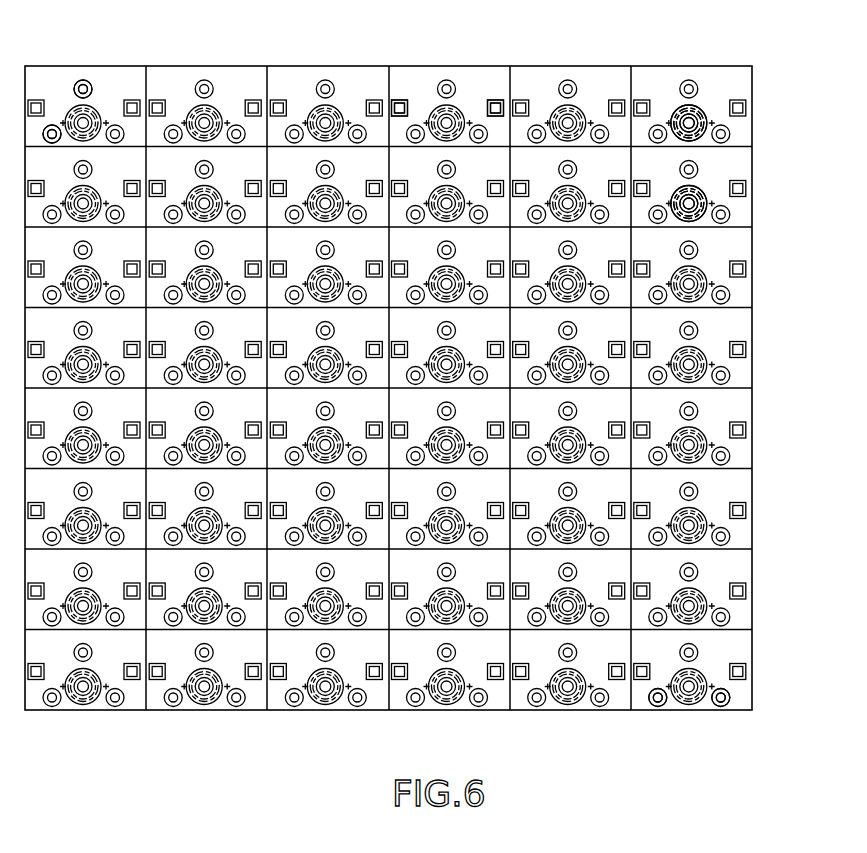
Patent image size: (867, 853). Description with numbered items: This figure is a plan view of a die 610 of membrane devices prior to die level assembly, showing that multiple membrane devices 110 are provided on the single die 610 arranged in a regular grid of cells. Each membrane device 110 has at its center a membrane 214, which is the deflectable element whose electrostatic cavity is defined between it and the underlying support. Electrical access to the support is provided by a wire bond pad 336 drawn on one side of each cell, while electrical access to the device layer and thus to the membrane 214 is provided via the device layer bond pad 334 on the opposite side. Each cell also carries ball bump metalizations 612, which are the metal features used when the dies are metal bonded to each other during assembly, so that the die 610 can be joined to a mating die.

The membrane device 110 is at (468, 72).
The membrane 214 is at (701, 111).
The device layer bond pad 334 is at (498, 100).
The wire bond pad 336 is at (402, 100).
The die 610 is at (766, 508).
The ball bump metalization 612 is at (52, 124).